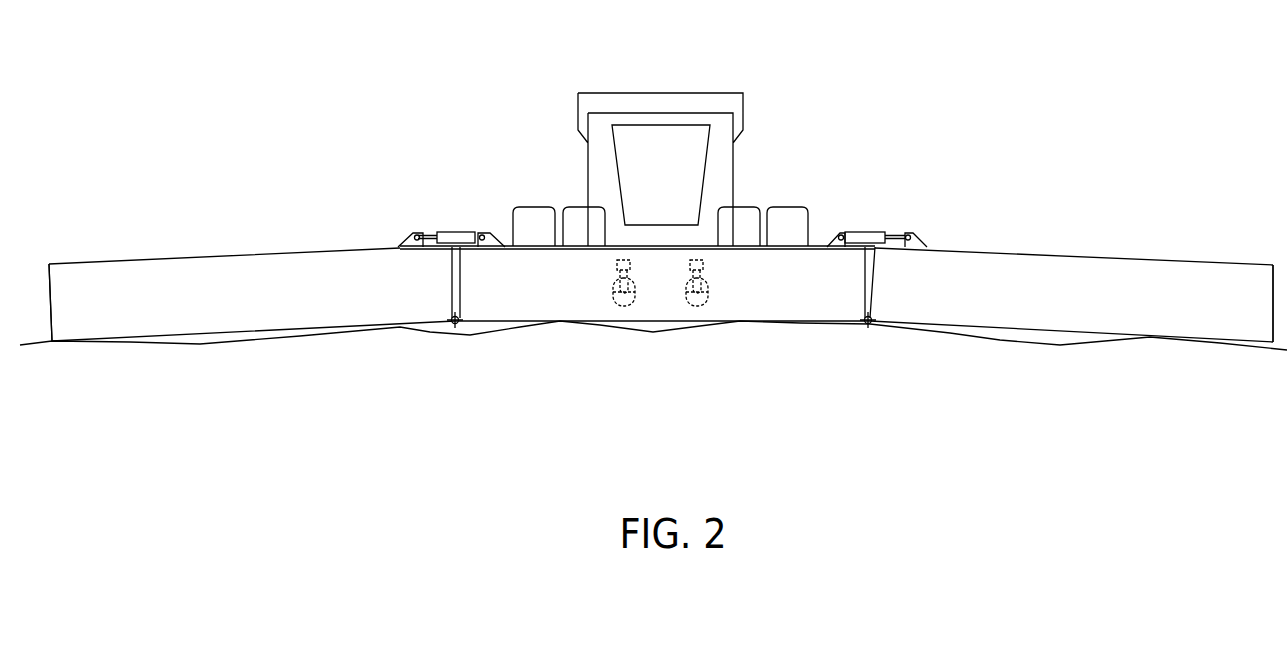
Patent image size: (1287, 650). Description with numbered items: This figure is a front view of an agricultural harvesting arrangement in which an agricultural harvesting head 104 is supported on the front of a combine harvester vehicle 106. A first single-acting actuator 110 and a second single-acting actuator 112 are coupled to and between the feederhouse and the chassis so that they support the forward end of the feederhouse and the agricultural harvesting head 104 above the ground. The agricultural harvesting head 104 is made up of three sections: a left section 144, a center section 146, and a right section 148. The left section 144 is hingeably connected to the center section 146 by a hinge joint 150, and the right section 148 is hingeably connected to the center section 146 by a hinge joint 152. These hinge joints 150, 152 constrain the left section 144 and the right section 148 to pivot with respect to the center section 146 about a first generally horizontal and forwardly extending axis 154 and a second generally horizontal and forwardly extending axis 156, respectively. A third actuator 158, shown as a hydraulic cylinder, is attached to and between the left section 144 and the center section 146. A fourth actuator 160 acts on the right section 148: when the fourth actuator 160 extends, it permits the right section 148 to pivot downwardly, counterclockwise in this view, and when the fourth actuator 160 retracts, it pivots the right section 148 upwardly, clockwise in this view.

The agricultural harvesting head 104 is at (1032, 94).
The combine harvester vehicle 106 is at (679, 93).
The first single-acting actuator 110 is at (710, 300).
The second single-acting actuator 112 is at (610, 297).
The left section 144 is at (1097, 257).
The center section 146 is at (648, 246).
The right section 148 is at (161, 258).
The hinge joint 150 is at (872, 326).
The hinge joint 152 is at (452, 323).
The first generally horizontal and forwardly extending axis 154 is at (873, 308).
The second generally horizontal and forwardly extending axis 156 is at (452, 318).
The third actuator 158 is at (865, 232).
The fourth actuator 160 is at (458, 232).